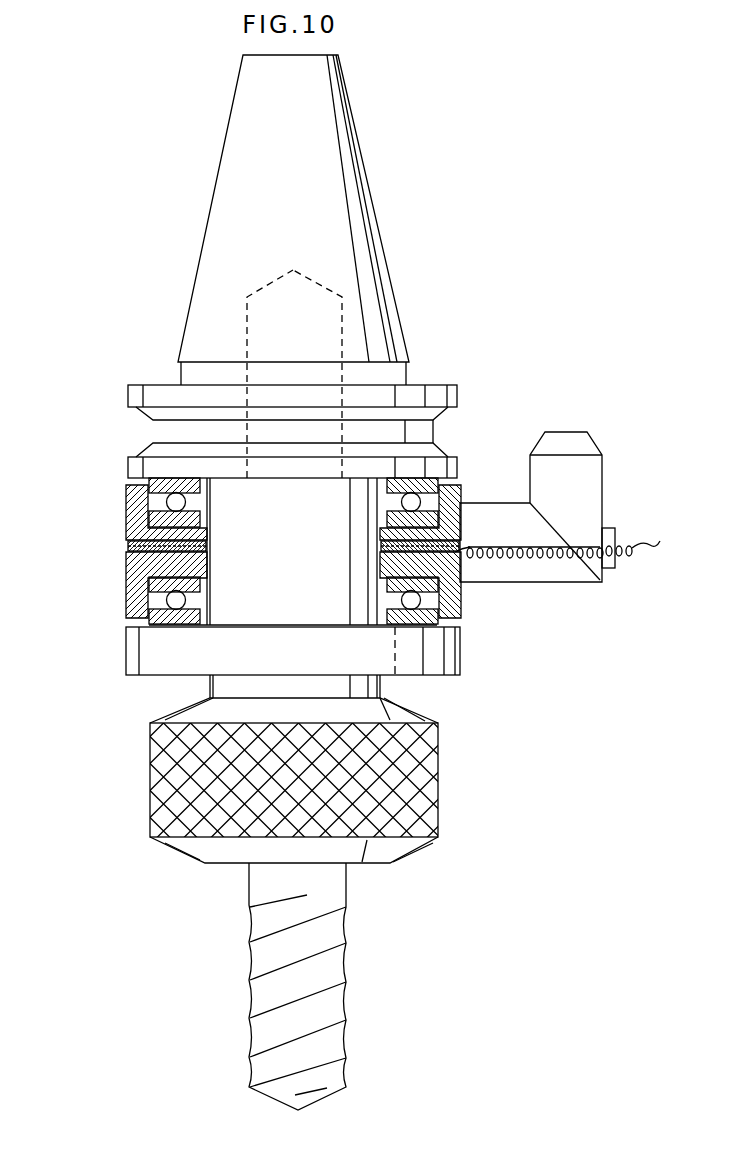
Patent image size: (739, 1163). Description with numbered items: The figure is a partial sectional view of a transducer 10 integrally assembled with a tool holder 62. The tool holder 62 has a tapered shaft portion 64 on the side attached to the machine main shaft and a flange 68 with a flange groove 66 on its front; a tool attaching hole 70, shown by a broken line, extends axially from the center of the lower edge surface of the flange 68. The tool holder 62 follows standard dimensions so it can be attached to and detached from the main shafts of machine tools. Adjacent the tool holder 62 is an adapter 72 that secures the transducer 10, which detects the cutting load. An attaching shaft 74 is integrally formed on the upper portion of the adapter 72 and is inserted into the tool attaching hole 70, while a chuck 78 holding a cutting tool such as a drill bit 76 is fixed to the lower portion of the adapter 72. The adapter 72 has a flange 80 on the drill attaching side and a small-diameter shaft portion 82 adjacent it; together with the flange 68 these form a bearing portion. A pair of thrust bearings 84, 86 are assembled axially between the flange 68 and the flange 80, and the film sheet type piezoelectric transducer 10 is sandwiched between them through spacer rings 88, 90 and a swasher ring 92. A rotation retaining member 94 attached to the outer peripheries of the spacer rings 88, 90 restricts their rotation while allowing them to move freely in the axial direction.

The tool holder 62 is at (206, 181).
The tapered shaft portion 64 is at (337, 186).
The flange groove 66 is at (170, 432).
The flange 68 is at (137, 470).
The tool attaching hole 70 is at (340, 333).
The adapter 72 is at (122, 648).
The attaching shaft 74 is at (247, 330).
The drill bit 76 is at (318, 968).
The chuck 78 is at (418, 808).
The flange 80 is at (450, 652).
The shaft portion 82 is at (304, 564).
The thrust bearing 84 is at (173, 503).
The thrust bearing 86 is at (173, 600).
The spacer ring 88 is at (462, 497).
The spacer ring 90 is at (455, 593).
The swasher ring 92 is at (447, 553).
The rotation retaining member 94 is at (590, 482).
The transducer 10 is at (130, 540).